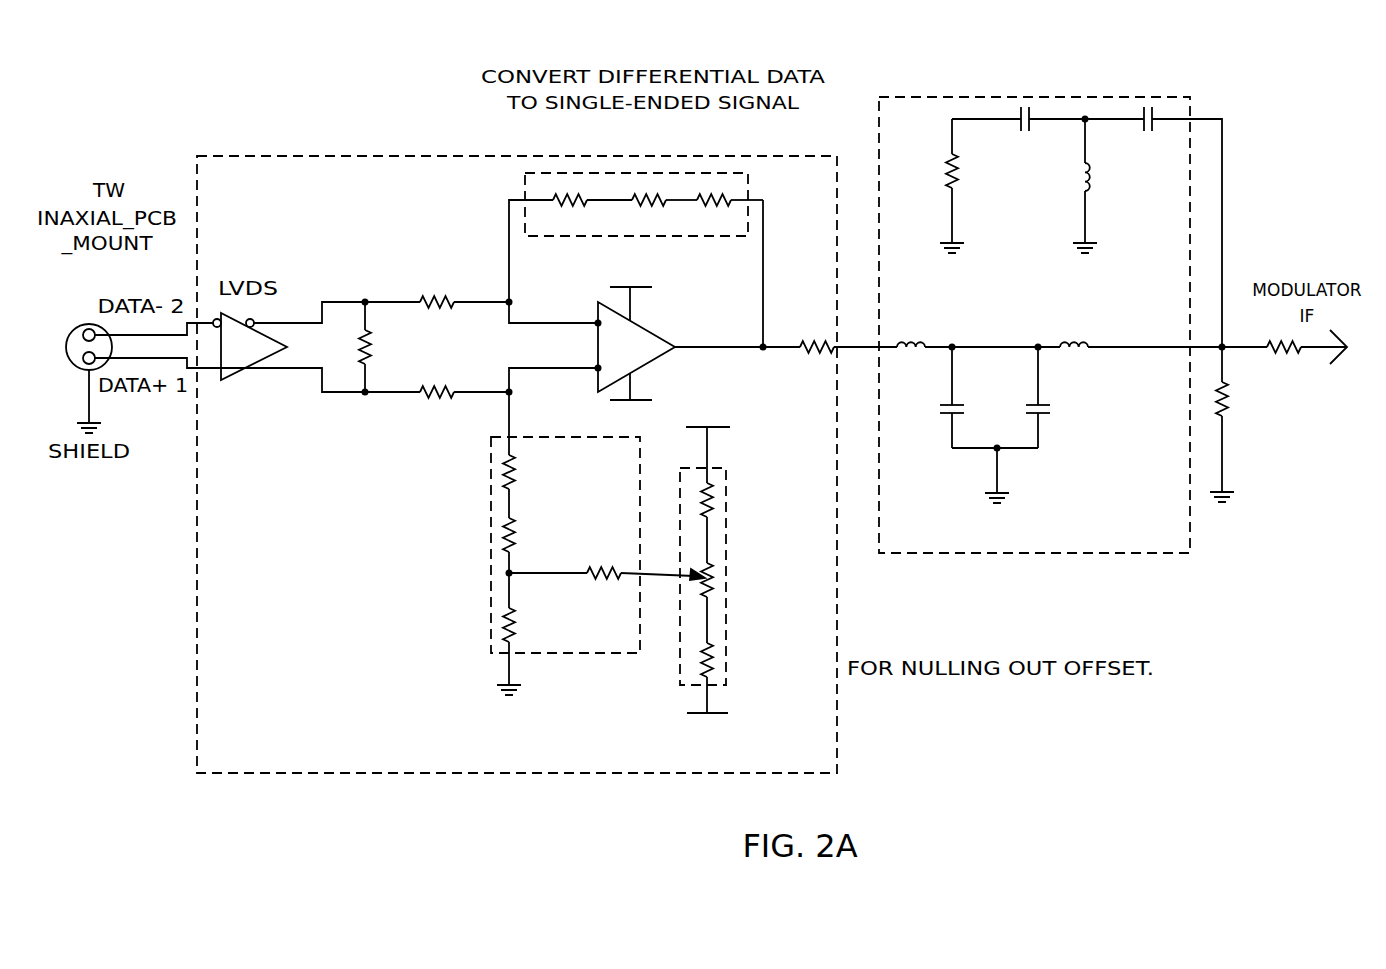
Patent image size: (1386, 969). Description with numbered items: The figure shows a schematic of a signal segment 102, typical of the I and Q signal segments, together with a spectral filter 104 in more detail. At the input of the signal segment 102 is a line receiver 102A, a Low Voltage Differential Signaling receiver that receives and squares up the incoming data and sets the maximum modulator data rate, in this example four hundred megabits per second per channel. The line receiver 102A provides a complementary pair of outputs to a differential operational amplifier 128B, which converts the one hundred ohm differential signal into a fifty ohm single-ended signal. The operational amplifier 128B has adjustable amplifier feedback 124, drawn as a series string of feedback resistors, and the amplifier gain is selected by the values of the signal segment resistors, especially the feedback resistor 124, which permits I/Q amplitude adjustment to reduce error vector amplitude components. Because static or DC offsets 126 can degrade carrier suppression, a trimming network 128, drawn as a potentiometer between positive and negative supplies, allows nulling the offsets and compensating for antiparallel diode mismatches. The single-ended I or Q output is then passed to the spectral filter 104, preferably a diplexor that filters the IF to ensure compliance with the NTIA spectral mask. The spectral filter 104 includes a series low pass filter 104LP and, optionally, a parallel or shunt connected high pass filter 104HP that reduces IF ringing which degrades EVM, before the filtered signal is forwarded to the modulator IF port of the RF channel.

The signal segment 102 is at (353, 156).
The line receiver 102A is at (236, 372).
The spectral filter 104 is at (897, 97).
The high pass filter 104HP is at (990, 190).
The low pass filter 104LP is at (960, 382).
The feedback resistor 124 is at (525, 182).
The DC offsets 126 is at (490, 478).
The trimming network 128 is at (727, 510).
The operational amplifier 128B is at (597, 391).